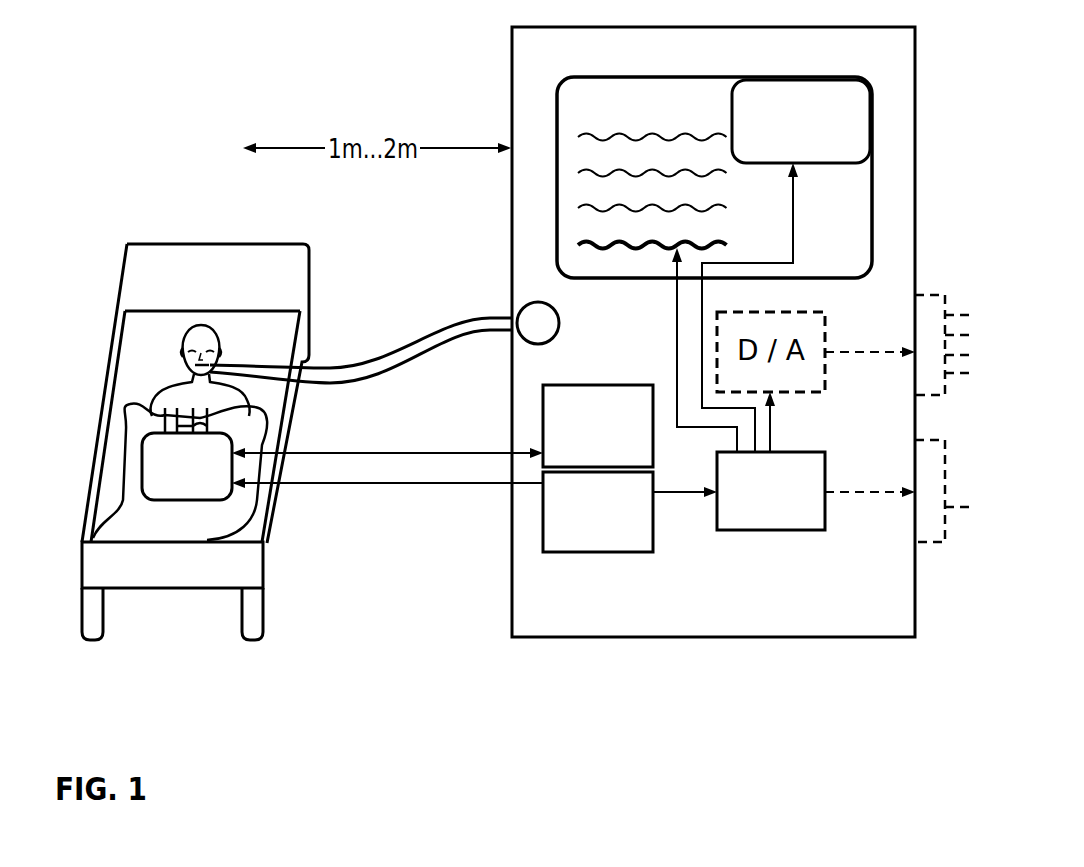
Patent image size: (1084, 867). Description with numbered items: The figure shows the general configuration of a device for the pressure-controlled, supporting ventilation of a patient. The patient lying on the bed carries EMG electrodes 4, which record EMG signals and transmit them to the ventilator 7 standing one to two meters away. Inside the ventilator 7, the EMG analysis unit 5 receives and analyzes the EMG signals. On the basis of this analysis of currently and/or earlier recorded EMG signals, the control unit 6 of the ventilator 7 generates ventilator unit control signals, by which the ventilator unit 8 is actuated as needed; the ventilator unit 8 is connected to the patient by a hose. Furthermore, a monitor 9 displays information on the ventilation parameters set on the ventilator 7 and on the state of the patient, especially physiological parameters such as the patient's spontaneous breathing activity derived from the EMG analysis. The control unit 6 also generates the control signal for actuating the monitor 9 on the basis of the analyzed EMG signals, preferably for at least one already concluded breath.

The EMG electrodes 4 is at (215, 472).
The EMG analysis unit 5 is at (598, 426).
The control unit 6 is at (647, 540).
The ventilator 7 is at (555, 607).
The ventilator unit 8 is at (540, 323).
The monitor 9 is at (593, 197).